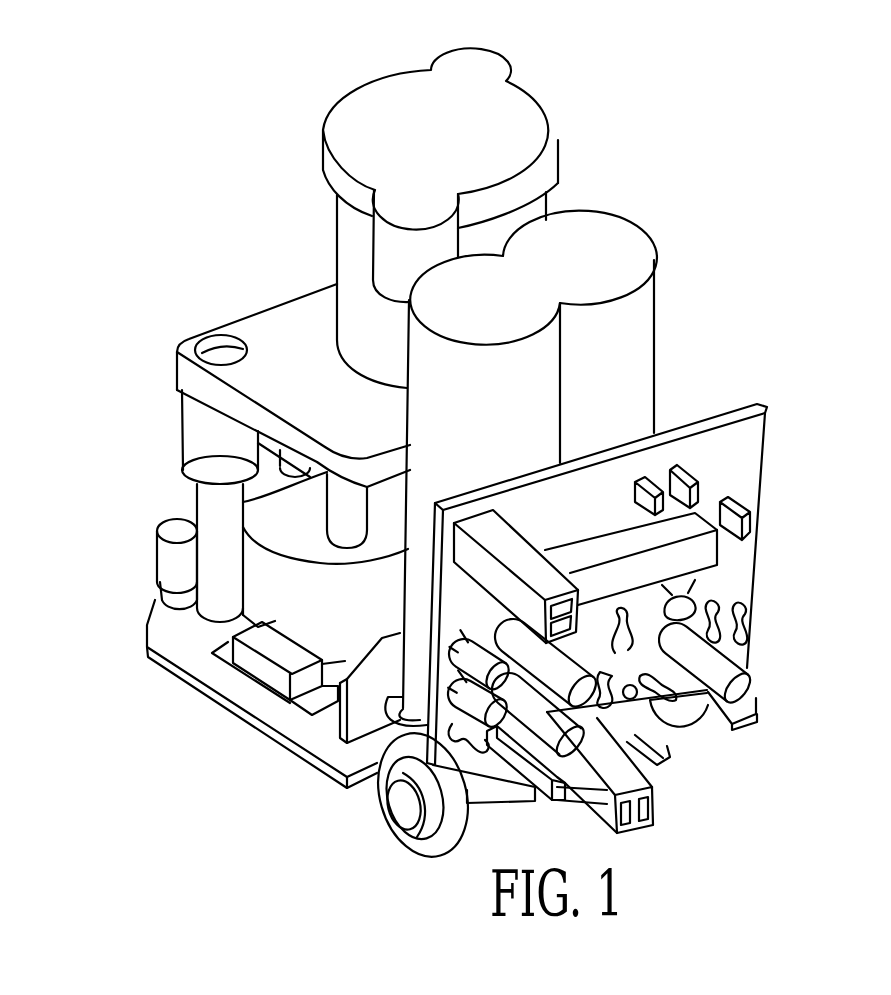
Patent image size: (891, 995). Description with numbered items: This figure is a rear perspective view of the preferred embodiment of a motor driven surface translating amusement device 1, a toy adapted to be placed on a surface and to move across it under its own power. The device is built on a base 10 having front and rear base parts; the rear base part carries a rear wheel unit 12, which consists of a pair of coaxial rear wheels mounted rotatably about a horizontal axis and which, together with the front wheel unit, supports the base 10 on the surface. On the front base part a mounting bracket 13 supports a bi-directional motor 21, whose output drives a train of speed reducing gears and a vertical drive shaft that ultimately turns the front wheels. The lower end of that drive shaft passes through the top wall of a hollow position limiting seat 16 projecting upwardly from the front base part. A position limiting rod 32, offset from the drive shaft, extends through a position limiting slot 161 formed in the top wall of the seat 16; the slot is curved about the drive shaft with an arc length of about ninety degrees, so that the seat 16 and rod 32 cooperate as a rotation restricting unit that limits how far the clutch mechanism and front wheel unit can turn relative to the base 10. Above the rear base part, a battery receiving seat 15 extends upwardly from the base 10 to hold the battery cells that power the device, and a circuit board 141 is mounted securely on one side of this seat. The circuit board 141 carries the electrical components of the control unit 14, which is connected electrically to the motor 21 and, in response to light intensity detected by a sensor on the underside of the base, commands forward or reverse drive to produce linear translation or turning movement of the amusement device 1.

The motor driven surface translating amusement device 1 is at (787, 367).
The base 10 is at (210, 669).
The rear wheel unit 12 is at (425, 850).
The mounting bracket 13 is at (262, 335).
The control unit 14 is at (753, 652).
The circuit board 141 is at (730, 473).
The battery receiving seat 15 is at (620, 353).
The position limiting seat 16 is at (307, 528).
The position limiting slot 161 is at (243, 502).
The bi-directional motor 21 is at (540, 213).
The position limiting rod 32 is at (186, 470).